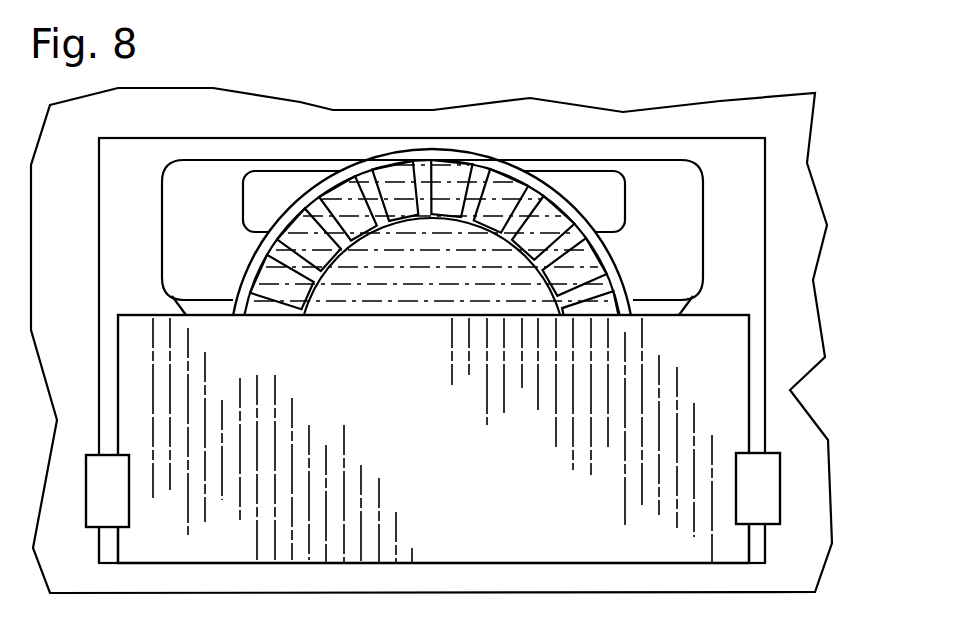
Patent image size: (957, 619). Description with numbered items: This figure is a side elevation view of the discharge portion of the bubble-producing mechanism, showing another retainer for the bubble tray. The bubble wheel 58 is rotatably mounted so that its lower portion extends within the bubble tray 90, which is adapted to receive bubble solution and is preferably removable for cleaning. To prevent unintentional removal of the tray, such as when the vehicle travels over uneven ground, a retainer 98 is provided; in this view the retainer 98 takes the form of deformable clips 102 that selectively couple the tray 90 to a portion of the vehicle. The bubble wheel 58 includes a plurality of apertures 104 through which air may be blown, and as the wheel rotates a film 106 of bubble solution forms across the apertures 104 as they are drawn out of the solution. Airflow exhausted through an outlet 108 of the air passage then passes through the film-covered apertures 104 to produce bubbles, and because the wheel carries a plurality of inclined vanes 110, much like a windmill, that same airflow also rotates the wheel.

The bubble wheel 58 is at (512, 271).
The bubble tray 90 is at (444, 467).
The retainer 98 is at (76, 489).
The deformable clips 102 is at (103, 507).
The apertures 104 is at (264, 241).
The film 106 is at (390, 170).
The outlet 108 is at (612, 215).
The inclined vanes 110 is at (497, 172).